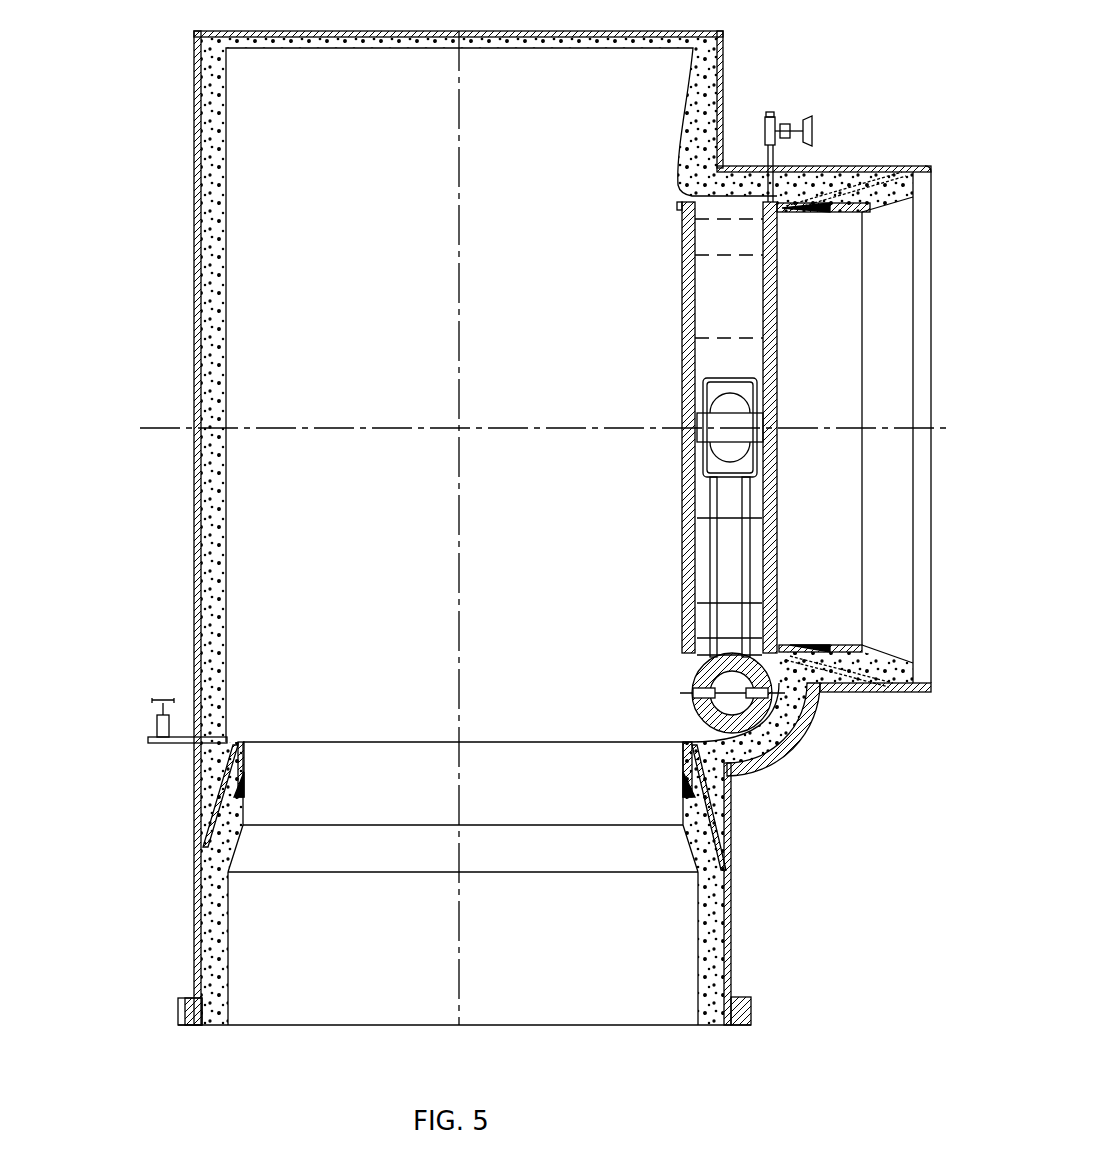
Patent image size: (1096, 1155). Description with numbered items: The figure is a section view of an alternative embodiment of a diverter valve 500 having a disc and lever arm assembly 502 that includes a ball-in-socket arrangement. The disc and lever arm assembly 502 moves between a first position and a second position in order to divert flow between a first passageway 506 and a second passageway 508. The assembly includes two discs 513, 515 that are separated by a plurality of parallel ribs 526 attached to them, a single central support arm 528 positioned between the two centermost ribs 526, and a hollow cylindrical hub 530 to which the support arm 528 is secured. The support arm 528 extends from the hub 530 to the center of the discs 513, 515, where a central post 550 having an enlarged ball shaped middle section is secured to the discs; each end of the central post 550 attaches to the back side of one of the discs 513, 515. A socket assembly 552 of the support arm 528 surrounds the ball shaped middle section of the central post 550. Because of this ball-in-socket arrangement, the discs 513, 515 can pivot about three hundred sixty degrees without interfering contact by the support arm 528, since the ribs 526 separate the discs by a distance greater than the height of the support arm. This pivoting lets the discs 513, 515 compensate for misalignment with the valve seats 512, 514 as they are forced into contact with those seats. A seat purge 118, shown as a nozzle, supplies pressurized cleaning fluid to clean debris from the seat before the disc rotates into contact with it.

The diverter valve 500 is at (85, 266).
The disc and lever arm assembly 502 is at (573, 498).
The first passageway 506 is at (400, 957).
The second passageway 508 is at (845, 574).
The valve seat 512 is at (662, 787).
The disc 513 is at (682, 345).
The valve seat 514 is at (812, 220).
The disc 515 is at (777, 372).
The parallel ribs 526 is at (733, 218).
The central support arm 528 is at (713, 535).
The hollow cylindrical hub 530 is at (705, 727).
The central post 550 is at (760, 420).
The socket assembly 552 is at (703, 388).
The seat purge 118 is at (785, 115).